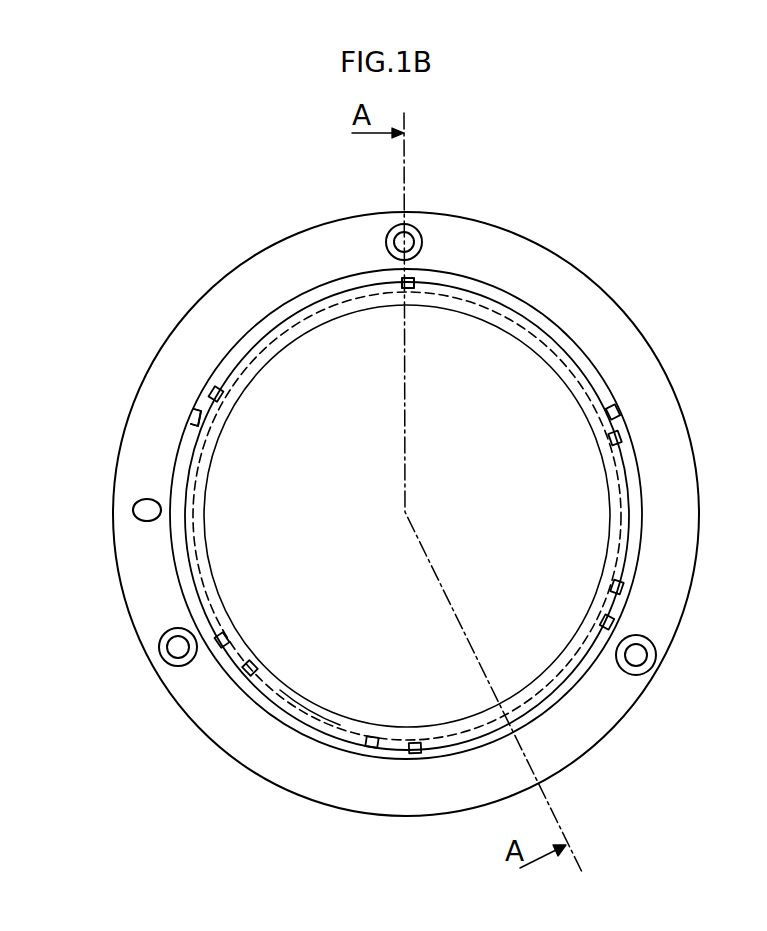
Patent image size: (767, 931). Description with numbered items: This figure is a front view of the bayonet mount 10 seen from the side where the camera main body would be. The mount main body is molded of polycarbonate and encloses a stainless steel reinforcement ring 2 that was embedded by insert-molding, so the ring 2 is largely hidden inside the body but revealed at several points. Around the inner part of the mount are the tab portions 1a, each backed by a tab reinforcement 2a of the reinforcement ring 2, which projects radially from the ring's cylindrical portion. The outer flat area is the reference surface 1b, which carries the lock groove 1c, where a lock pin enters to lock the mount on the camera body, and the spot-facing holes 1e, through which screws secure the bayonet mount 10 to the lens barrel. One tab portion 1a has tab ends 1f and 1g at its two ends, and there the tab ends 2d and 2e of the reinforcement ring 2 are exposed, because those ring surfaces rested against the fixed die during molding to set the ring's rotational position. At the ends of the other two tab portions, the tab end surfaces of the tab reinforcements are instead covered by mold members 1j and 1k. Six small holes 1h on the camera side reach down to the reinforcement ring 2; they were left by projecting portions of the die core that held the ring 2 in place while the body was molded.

The bayonet mount 10 is at (492, 126).
The tab portion 1a is at (253, 330).
The reference surface 1b is at (640, 378).
The lock groove 1c is at (138, 498).
The spot-facing hole 1e is at (423, 237).
The tab end 1f is at (418, 281).
The tab end 2d is at (418, 281).
The tab end 1g is at (197, 420).
The tab end 2e is at (197, 420).
The hole 1h is at (400, 278).
The mold member 1j is at (196, 652).
The mold member 1k is at (613, 408).
The reinforcement ring 2 is at (318, 312).
The tab reinforcement 2a is at (310, 720).